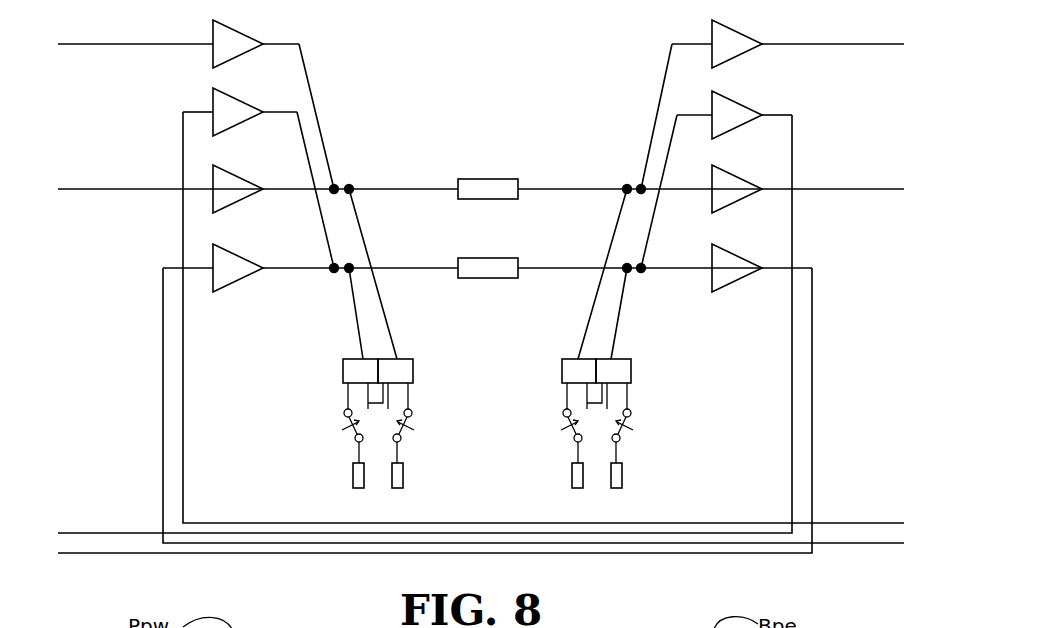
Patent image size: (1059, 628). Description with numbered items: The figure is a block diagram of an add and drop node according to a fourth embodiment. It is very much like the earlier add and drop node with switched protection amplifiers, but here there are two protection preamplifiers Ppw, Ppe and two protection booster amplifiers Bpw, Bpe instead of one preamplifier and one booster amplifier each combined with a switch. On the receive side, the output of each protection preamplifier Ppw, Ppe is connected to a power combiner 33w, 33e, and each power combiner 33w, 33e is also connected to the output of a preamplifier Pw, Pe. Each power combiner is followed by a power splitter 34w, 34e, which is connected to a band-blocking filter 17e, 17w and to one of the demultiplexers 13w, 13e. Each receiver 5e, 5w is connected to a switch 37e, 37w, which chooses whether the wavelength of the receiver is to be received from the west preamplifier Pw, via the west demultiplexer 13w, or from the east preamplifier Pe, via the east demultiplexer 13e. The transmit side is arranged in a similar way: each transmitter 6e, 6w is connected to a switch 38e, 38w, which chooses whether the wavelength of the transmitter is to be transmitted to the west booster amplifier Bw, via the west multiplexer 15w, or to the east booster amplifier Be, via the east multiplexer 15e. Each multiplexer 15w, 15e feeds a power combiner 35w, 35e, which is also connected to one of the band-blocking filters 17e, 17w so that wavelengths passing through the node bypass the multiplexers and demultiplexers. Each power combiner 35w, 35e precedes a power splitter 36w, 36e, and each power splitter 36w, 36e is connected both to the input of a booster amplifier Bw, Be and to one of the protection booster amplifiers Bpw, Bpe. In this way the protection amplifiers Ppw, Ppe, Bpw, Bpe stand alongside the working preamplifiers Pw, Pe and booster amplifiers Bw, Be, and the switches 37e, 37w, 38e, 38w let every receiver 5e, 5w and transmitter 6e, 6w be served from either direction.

The west protection preamplifier Ppw is at (235, 26).
The east protection preamplifier Ppe is at (235, 94).
The west preamplifier Pw is at (235, 170).
The east preamplifier Pe is at (235, 250).
The east protection booster amplifier Bpe is at (713, 22).
The west protection booster amplifier Bpw is at (713, 92).
The east booster amplifier Be is at (713, 166).
The west booster amplifier Bw is at (713, 245).
The west power combiner 33w is at (336, 186).
The west power splitter 34w is at (353, 188).
The east power combiner 33e is at (333, 268).
The east power splitter 34e is at (350, 265).
The east power combiner 35e is at (625, 189).
The east power splitter 36e is at (641, 188).
The west power combiner 35w is at (628, 270).
The west power splitter 36w is at (641, 270).
The band-blocking filter 17e is at (510, 179).
The band-blocking filter 17w is at (508, 279).
The east demultiplexer 13e is at (343, 373).
The west demultiplexer 13w is at (413, 376).
The east multiplexer 15e is at (562, 372).
The west multiplexer 15w is at (631, 372).
The receiver switch 37e is at (344, 413).
The receiver switch 37w is at (412, 413).
The transmitter switch 38e is at (563, 413).
The transmitter switch 38w is at (631, 413).
The receiver 5e is at (353, 465).
The receiver 5w is at (403, 482).
The transmitter 6e is at (577, 490).
The transmitter 6w is at (622, 466).